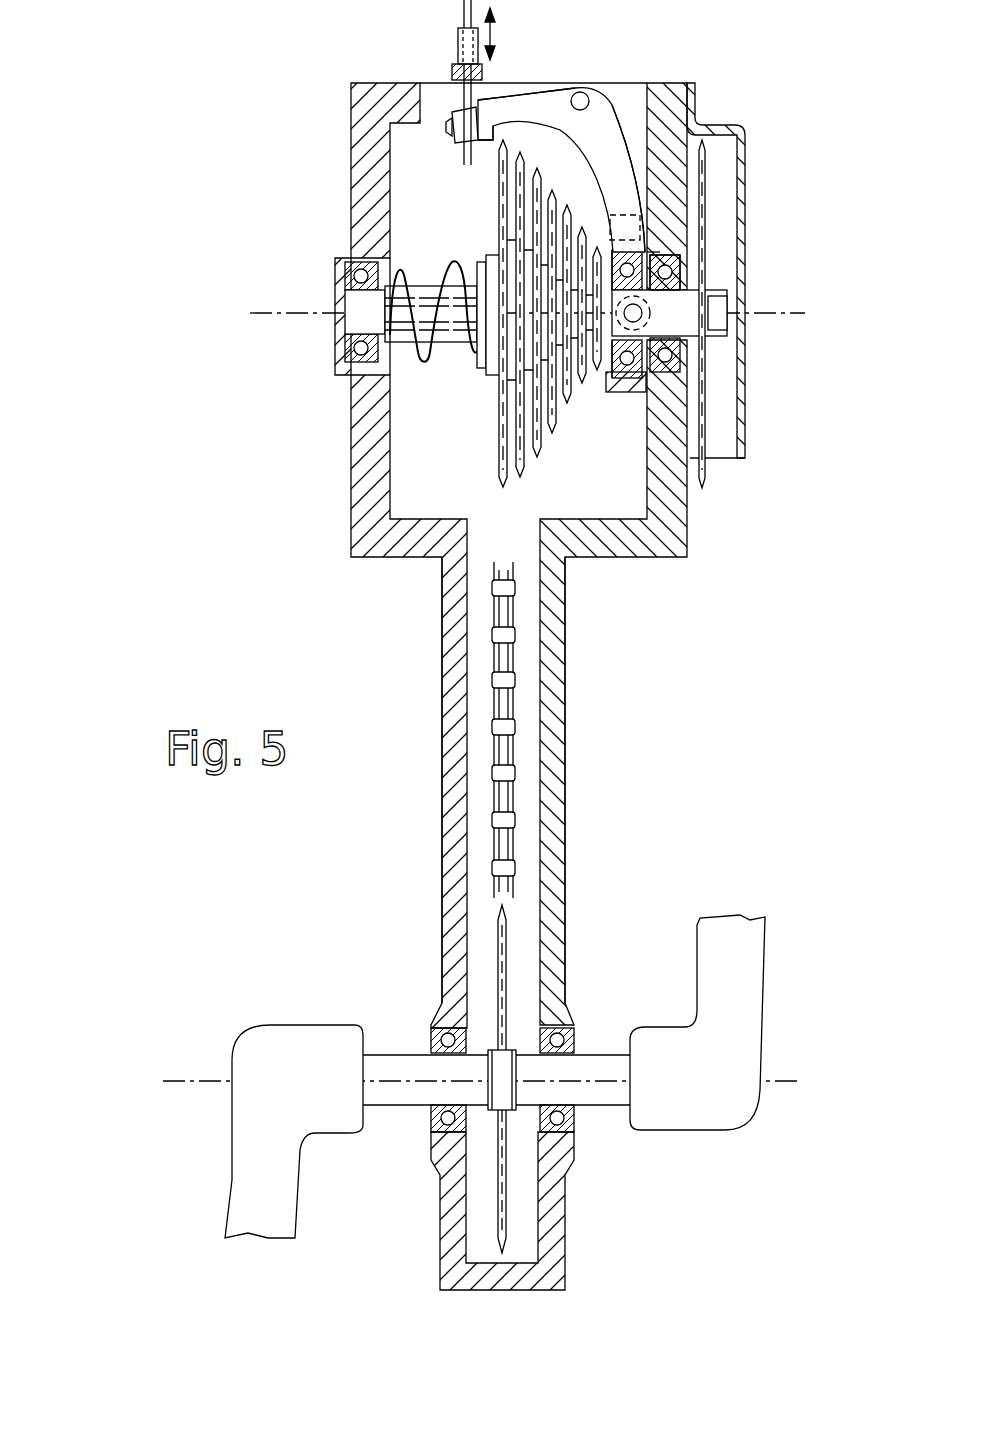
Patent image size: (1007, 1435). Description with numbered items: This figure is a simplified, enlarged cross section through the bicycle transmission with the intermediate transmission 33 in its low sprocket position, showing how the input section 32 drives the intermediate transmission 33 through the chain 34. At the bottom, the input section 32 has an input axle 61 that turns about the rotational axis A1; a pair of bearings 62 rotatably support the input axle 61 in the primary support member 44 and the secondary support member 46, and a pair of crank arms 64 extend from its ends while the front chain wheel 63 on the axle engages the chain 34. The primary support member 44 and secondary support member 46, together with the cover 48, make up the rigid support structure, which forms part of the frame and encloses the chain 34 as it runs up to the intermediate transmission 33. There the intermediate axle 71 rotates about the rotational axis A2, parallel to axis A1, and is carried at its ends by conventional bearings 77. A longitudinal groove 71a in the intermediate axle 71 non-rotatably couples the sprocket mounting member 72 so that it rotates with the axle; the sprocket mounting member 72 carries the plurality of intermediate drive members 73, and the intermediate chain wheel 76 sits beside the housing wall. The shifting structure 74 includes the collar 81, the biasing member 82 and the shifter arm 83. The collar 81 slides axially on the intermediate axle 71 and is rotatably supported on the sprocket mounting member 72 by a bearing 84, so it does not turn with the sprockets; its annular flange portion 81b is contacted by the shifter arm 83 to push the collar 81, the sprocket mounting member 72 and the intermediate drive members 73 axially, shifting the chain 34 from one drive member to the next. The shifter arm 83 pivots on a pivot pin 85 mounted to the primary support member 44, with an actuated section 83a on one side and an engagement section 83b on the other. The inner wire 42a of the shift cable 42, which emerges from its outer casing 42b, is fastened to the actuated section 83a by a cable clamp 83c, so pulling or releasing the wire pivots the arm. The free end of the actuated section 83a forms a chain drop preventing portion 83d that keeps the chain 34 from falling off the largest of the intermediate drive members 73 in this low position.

The input section 32 is at (345, 945).
The intermediate transmission 33 is at (445, 455).
The chain 34 is at (510, 762).
The shift cable 42 is at (318, 58).
The inner wire 42a is at (458, 12).
The outer casing 42b is at (452, 48).
The primary support member 44 is at (442, 678).
The secondary support member 46 is at (566, 674).
The cover 48 is at (745, 135).
The input axle 61 is at (590, 1108).
The bearings 62 is at (440, 1030).
The front chain wheel 63 is at (505, 946).
The crank arms 64 is at (232, 1172).
The intermediate axle 71 is at (420, 350).
The longitudinal groove 71a is at (392, 300).
The sprocket mounting member 72 is at (490, 375).
The intermediate drive members 73 is at (560, 470).
The shifting structure 74 is at (540, 82).
The chain wheel 76 is at (708, 470).
The bearings 77 is at (345, 376).
The collar 81 is at (672, 395).
The annular flange portion 81b is at (600, 383).
The biasing member 82 is at (440, 275).
The shifter arm 83 is at (625, 105).
The actuated section 83a is at (500, 95).
The engagement section 83b is at (635, 165).
The cable clamp 83c is at (445, 128).
The chain drop preventing portion 83d is at (495, 140).
The bearing 84 is at (682, 268).
The pivot pin 85 is at (590, 92).
The rotational axis A1 is at (200, 1080).
The rotational axis A2 is at (280, 312).